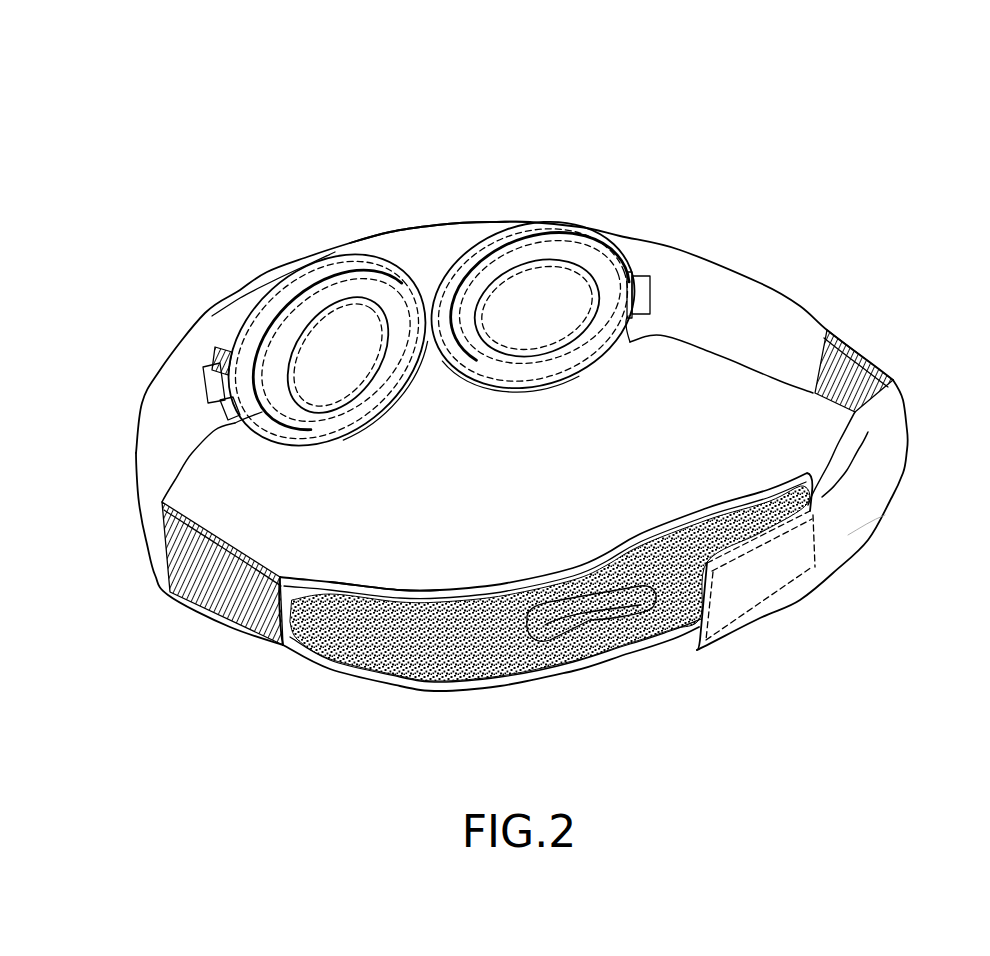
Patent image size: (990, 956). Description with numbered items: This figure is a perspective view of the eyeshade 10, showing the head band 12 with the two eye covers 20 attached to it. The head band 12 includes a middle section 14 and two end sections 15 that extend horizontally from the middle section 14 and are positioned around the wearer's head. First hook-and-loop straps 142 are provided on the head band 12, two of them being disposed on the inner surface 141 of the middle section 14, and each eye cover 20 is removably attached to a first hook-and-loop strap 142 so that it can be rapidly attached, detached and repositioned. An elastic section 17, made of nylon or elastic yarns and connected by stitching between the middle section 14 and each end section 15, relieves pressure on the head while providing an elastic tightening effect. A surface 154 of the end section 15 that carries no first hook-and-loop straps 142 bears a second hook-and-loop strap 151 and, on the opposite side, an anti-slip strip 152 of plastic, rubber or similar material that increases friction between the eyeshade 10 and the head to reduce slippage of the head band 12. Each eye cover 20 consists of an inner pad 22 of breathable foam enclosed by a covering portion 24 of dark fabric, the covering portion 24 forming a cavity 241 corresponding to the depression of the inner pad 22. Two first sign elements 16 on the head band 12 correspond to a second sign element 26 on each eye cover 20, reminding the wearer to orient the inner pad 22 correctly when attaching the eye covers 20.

The eyeshade 10 is at (585, 48).
The head band 12 is at (780, 275).
The middle section 14 is at (377, 238).
The inner surface 141 is at (427, 257).
The first hook-and-loop strap 142 is at (629, 272).
The end section 15 is at (603, 558).
The second hook-and-loop strap 151 is at (447, 665).
The anti-slip strip 152 is at (597, 635).
The surface 154 is at (370, 600).
The first sign element 16 is at (648, 280).
The elastic section 17 is at (857, 367).
The eye cover 20 is at (513, 221).
The inner pad 22 is at (550, 250).
The covering portion 24 is at (387, 407).
The cavity 241 is at (550, 330).
The second sign element 26 is at (638, 322).